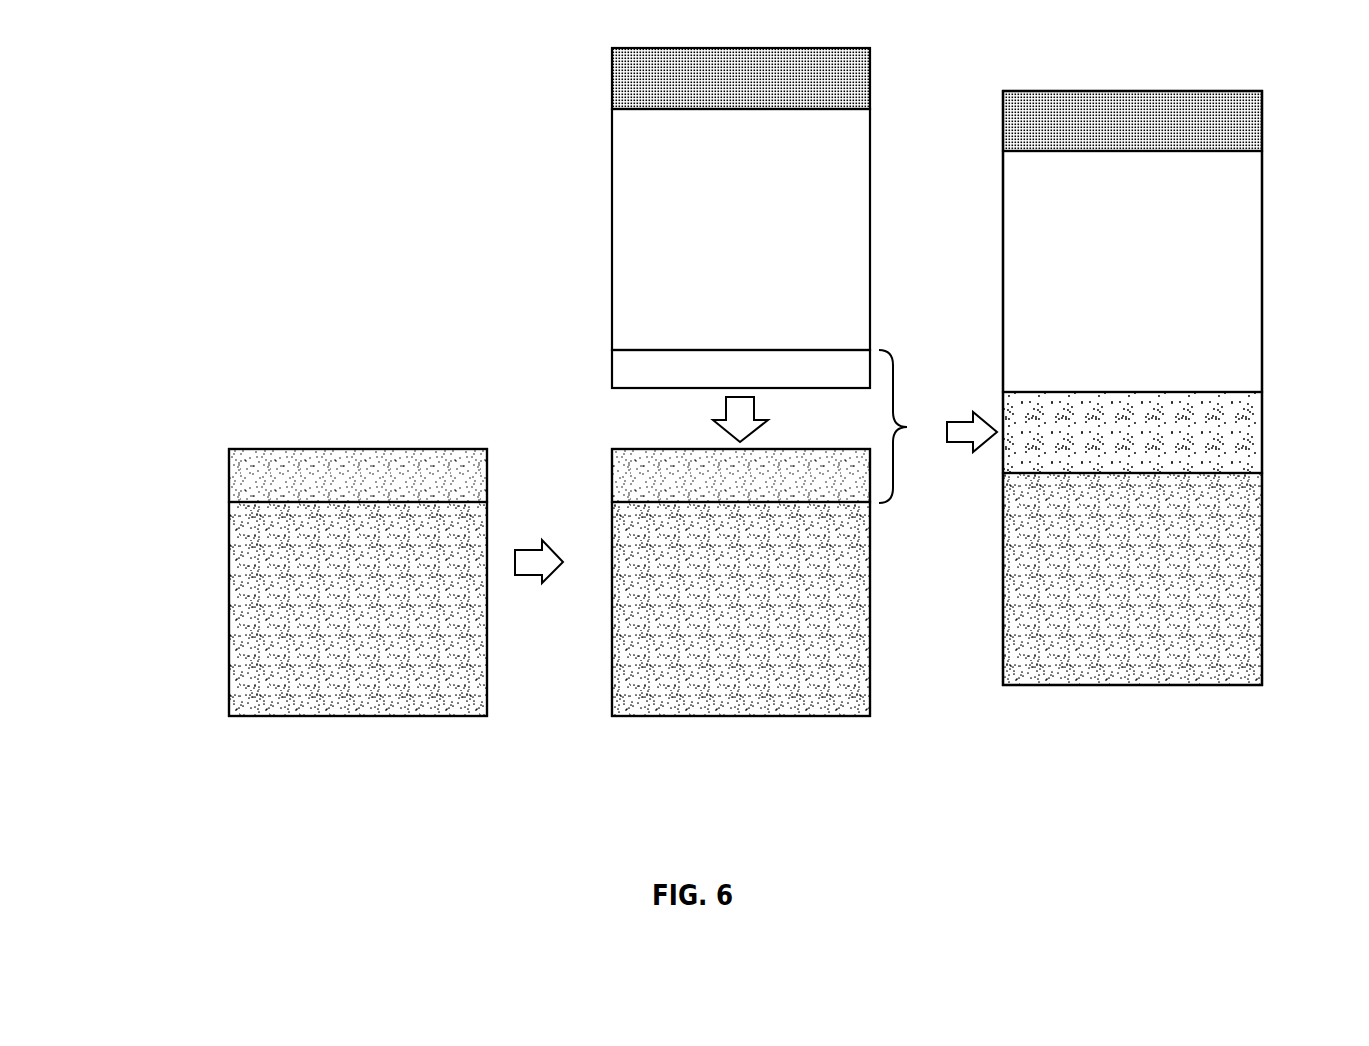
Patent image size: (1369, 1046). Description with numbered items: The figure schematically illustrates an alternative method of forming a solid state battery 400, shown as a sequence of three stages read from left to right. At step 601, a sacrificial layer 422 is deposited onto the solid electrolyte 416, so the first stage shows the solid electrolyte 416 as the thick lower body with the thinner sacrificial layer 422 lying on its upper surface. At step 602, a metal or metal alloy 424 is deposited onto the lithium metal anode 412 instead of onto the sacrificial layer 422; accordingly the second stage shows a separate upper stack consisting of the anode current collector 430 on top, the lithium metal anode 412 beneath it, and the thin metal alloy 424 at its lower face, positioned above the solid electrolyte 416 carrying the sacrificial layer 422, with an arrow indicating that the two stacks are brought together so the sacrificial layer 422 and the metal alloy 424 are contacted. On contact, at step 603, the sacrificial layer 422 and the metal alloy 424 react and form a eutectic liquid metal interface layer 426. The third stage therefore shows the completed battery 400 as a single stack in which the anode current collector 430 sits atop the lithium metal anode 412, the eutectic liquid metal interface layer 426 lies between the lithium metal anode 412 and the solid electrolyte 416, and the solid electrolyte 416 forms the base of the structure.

The solid state battery 400 is at (995, 65).
The lithium metal anode 412 is at (620, 216).
The solid electrolyte 416 is at (243, 653).
The sacrificial layer 422 is at (243, 478).
The metal or metal alloy 424 is at (622, 372).
The eutectic liquid metal interface layer 426 is at (1247, 432).
The anode current collector 430 is at (620, 80).
The step of depositing the sacrificial layer 601 is at (372, 726).
The step of depositing the metal alloy onto the anode 602 is at (758, 726).
The step of reacting to form the interface layer 603 is at (1190, 727).